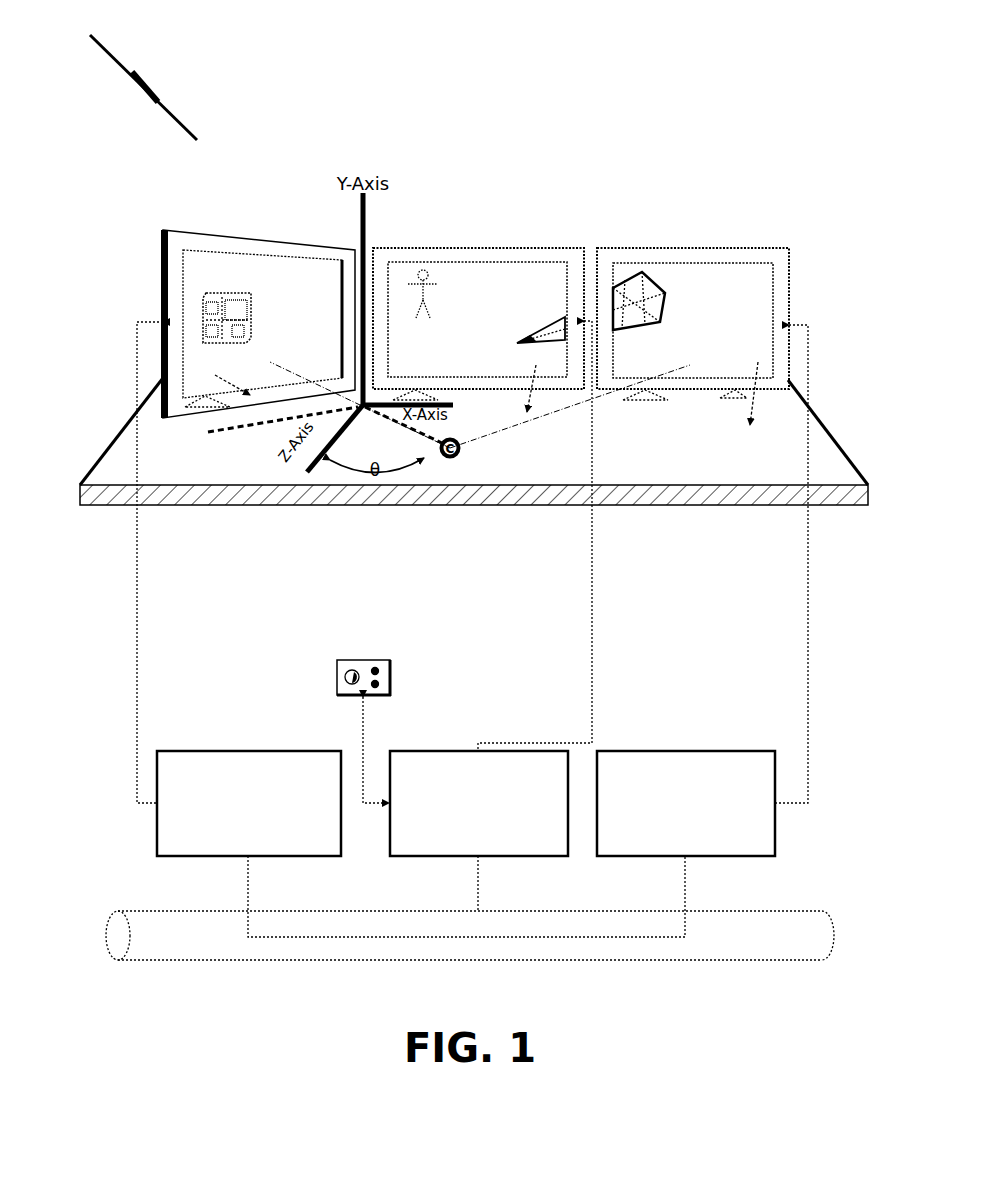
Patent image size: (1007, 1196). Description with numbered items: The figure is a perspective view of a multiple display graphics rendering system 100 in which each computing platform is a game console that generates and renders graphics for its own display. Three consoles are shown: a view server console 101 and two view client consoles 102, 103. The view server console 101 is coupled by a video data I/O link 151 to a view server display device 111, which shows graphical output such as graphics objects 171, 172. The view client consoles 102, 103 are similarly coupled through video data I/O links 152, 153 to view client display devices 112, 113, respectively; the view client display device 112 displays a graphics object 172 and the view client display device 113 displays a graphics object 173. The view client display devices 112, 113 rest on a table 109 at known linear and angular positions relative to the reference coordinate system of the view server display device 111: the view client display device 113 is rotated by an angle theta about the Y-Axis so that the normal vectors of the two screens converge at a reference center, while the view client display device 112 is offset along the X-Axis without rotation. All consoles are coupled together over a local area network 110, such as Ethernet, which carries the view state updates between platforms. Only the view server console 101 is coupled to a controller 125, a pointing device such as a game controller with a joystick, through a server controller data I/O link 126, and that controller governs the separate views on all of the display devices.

The multiple display graphics rendering system 100 is at (136, 75).
The table 109 is at (120, 428).
The view client display device 113 is at (250, 236).
The view server display device 111 is at (480, 246).
The view client display device 112 is at (692, 238).
The graphics object 173 is at (254, 316).
The graphics object 171 is at (440, 284).
The graphics object 172 is at (452, 440).
The controller 125 is at (357, 655).
The server controller data I/O link 126 is at (369, 750).
The view client console 103 is at (249, 803).
The view server console 101 is at (479, 803).
The view client console 102 is at (686, 803).
The local area network (LAN) 110 is at (470, 908).
The video data I/O link 151 is at (551, 536).
The video data I/O link 152 is at (807, 564).
The video data I/O link 153 is at (137, 562).